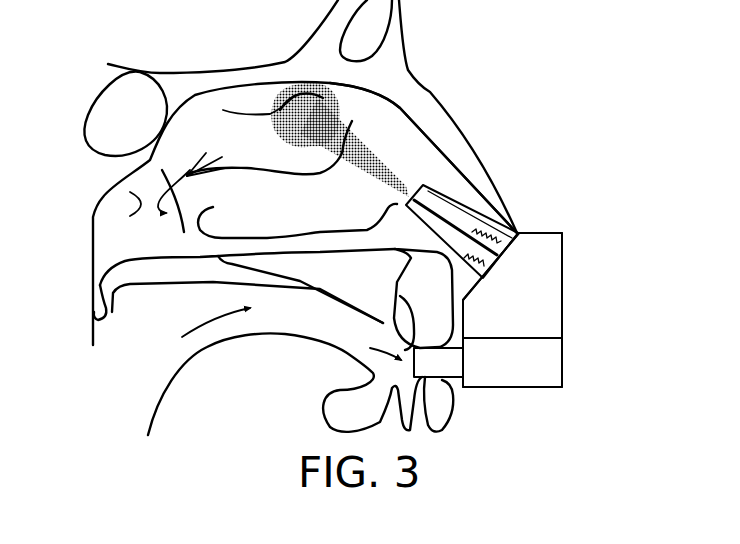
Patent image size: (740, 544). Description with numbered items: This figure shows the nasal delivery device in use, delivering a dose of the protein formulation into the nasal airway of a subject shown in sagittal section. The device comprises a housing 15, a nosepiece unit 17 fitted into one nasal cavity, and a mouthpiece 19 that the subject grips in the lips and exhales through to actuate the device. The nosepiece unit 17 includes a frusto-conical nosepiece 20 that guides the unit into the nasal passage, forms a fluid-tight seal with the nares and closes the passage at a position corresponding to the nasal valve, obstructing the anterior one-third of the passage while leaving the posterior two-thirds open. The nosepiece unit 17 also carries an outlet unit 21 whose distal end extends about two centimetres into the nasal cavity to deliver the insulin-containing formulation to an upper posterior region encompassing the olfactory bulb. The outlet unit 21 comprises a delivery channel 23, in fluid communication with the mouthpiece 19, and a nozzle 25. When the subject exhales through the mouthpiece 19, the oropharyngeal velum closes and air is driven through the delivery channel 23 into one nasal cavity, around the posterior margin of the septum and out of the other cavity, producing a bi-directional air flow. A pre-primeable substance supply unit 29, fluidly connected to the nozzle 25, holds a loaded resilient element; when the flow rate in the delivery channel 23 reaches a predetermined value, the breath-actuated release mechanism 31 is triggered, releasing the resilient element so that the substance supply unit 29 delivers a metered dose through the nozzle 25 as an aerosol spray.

The housing 15 is at (563, 250).
The nosepiece unit 17 is at (513, 221).
The mouthpiece 19 is at (436, 372).
The nosepiece 20 is at (501, 215).
The outlet unit 21 is at (472, 209).
The delivery channel 23 is at (446, 197).
The nozzle 25 is at (475, 208).
The substance supply unit 29 is at (552, 310).
The breath-actuated release mechanism 31 is at (552, 367).